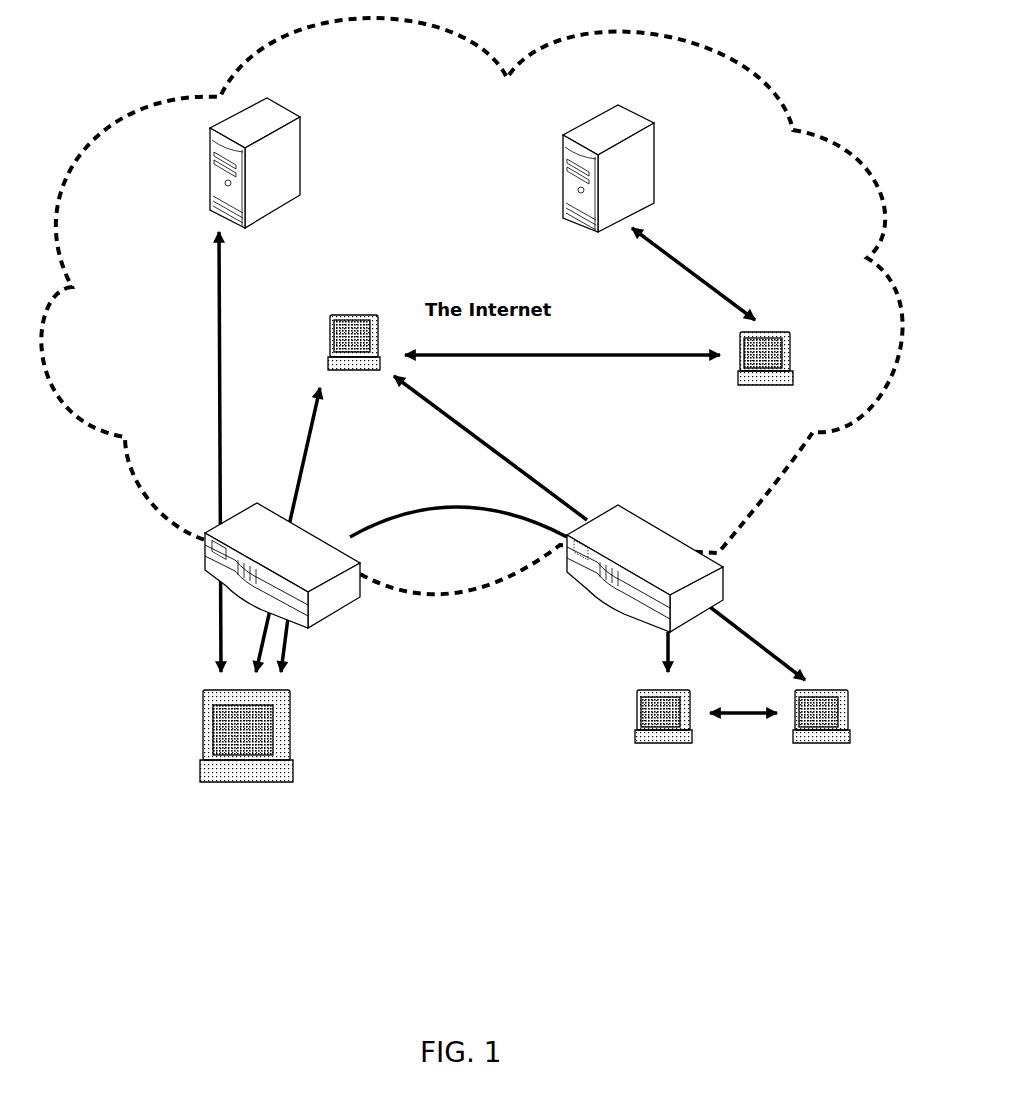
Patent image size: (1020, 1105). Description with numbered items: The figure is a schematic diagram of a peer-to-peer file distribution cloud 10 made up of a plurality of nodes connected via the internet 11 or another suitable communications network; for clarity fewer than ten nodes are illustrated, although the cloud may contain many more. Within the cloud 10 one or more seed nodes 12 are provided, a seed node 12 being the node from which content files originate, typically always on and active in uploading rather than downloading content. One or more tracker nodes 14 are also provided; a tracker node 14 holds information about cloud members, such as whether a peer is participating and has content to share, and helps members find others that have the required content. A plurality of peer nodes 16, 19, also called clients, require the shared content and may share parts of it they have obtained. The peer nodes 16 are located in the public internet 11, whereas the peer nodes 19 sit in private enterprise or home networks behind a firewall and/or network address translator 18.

The peer-to-peer file distribution cloud 10 is at (105, 465).
The internet 11 is at (143, 108).
The seed node 12 is at (209, 190).
The tracker node 14 is at (562, 170).
The peer node 16 is at (350, 313).
The firewall and/or network address translator (NAT) 18 is at (313, 538).
The peer node 19 is at (295, 707).